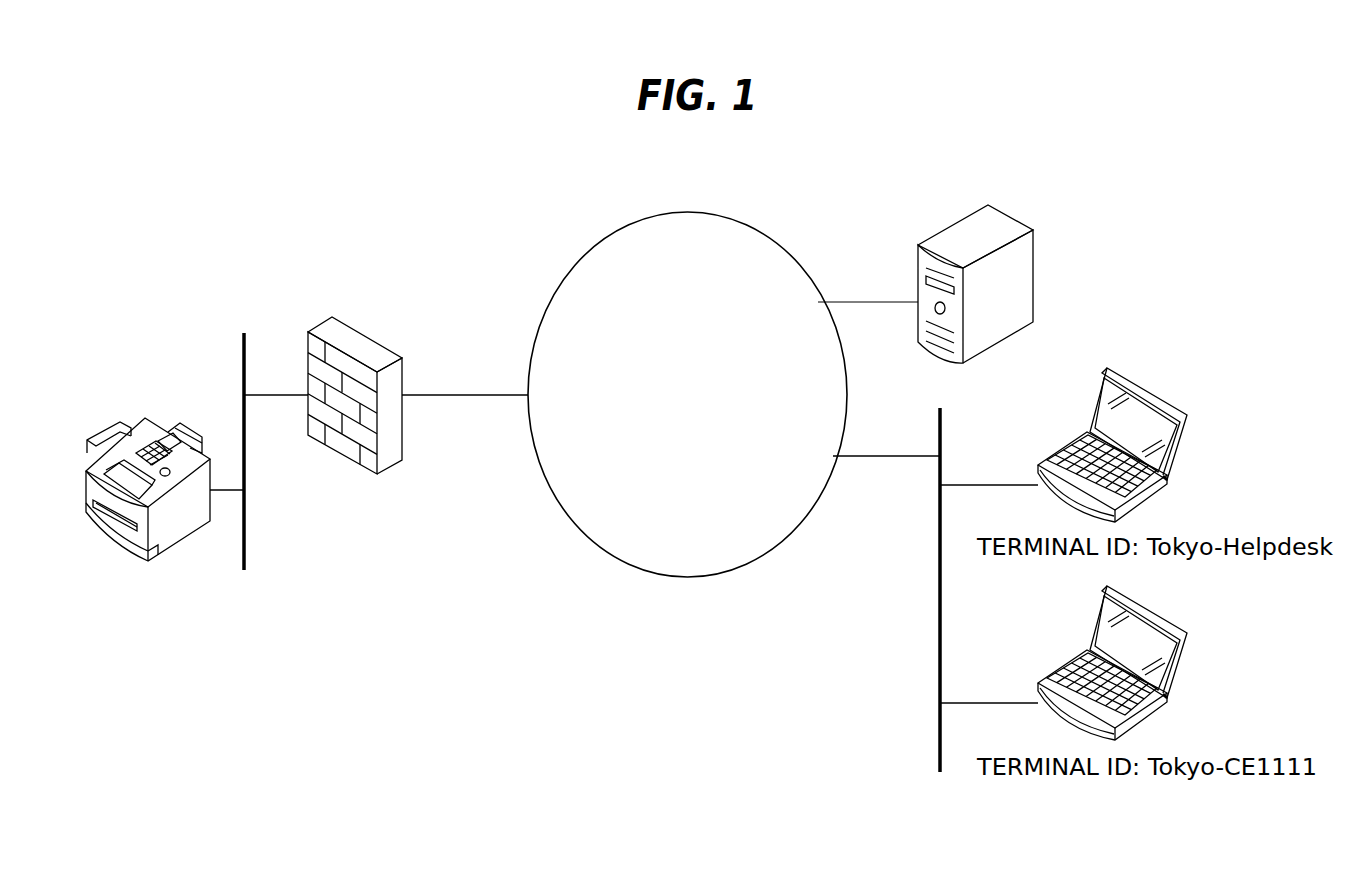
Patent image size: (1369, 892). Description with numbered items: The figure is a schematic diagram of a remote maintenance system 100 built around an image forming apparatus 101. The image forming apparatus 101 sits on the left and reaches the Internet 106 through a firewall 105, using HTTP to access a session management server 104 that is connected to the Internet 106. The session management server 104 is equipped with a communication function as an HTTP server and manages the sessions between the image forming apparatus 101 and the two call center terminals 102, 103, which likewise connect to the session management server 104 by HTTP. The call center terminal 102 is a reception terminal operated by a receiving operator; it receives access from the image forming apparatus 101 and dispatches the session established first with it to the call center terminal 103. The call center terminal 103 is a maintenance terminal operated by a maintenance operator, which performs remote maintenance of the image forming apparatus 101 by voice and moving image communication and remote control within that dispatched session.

The remote maintenance system 100 is at (158, 177).
The image forming apparatus 101 is at (148, 420).
The call center terminal 102 is at (1188, 417).
The call center terminal 103 is at (1188, 635).
The session management server 104 is at (990, 205).
The firewall 105 is at (333, 317).
The Internet 106 is at (687, 577).